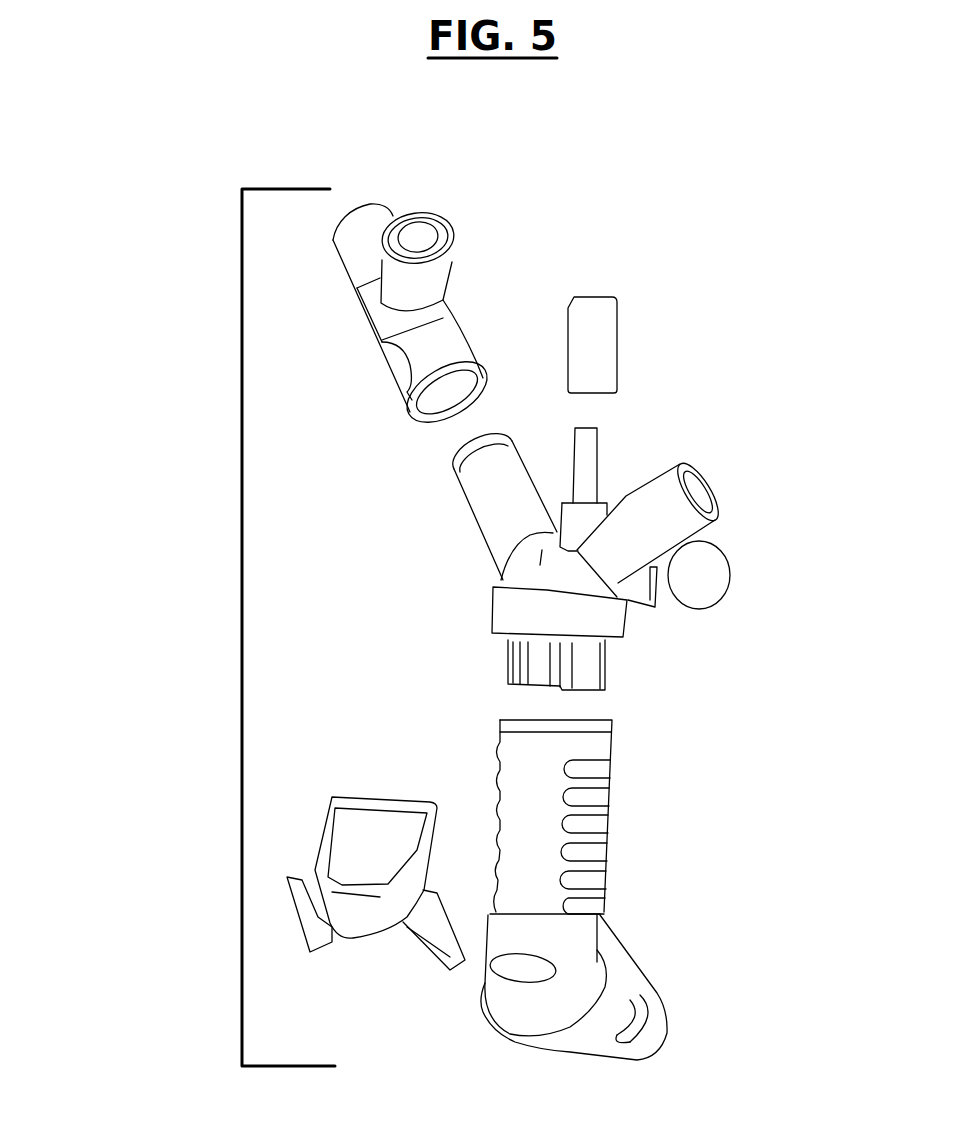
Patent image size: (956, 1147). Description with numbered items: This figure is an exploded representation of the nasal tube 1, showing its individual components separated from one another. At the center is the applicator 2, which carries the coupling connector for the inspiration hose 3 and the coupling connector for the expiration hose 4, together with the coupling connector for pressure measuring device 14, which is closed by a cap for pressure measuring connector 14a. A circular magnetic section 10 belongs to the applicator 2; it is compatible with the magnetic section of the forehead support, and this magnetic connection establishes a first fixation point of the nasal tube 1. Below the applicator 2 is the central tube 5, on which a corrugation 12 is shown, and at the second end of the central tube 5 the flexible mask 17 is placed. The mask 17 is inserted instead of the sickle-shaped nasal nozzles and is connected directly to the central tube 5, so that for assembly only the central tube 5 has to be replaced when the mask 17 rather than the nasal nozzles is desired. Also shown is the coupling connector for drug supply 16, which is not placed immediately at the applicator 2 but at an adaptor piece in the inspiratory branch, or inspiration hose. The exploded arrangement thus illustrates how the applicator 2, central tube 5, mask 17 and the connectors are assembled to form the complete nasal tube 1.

The nasal tube 1 is at (142, 357).
The coupling connector for drug supply 16 is at (425, 280).
The cap for pressure measuring connector 14a is at (603, 330).
The coupling connector for pressure measuring device 14 is at (588, 443).
The coupling connector for the inspiration hose 3 is at (706, 490).
The coupling connector for the expiration hose 4 is at (488, 518).
The applicator 2 is at (518, 606).
The magnetic section 10 is at (699, 590).
The corrugation 12 is at (500, 783).
The central tube 5 is at (573, 817).
The mask 17 is at (628, 1005).